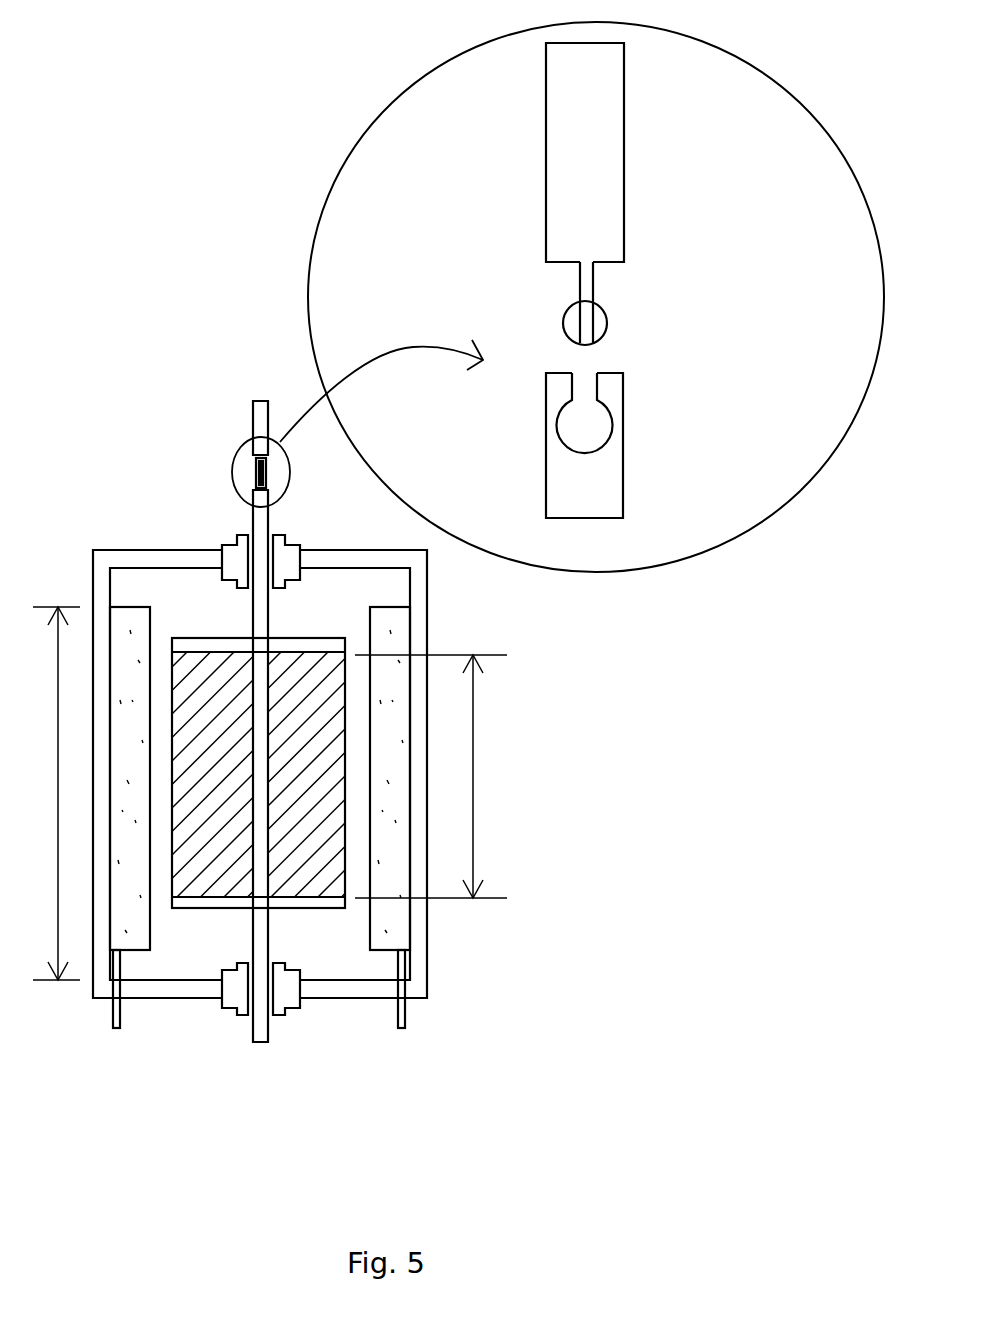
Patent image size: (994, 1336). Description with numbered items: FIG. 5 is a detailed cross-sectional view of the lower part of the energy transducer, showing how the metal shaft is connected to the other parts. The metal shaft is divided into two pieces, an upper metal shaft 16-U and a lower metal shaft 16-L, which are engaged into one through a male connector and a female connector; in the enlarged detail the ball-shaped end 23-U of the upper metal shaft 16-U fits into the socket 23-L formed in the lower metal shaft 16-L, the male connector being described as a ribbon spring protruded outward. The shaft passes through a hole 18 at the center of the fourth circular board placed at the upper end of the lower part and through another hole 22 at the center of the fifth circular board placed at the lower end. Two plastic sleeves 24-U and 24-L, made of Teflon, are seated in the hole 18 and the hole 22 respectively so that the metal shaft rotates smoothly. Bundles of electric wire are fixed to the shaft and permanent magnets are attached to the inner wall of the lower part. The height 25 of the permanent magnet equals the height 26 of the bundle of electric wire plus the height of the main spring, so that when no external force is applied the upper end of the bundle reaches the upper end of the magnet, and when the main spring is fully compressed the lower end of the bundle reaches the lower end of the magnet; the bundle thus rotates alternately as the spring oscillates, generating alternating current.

The hole 18 is at (258, 537).
The hole 22 is at (252, 1013).
The plastic sleeve 24-U is at (283, 537).
The plastic sleeve 24-L is at (280, 1008).
The height of the permanent magnet 25 is at (50, 793).
The height of the bundle of electric wire 26 is at (434, 776).
The upper metal shaft 16-U is at (610, 200).
The lower metal shaft 16-L is at (615, 485).
The upper ball coupling 23-U is at (588, 325).
The lower socket coupling 23-L is at (593, 425).